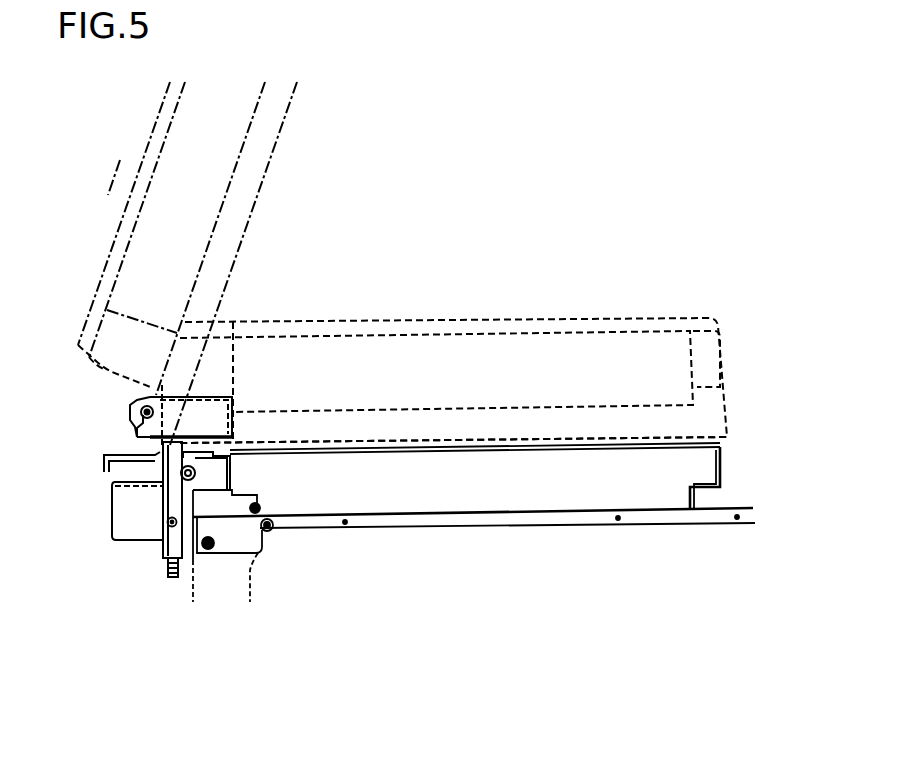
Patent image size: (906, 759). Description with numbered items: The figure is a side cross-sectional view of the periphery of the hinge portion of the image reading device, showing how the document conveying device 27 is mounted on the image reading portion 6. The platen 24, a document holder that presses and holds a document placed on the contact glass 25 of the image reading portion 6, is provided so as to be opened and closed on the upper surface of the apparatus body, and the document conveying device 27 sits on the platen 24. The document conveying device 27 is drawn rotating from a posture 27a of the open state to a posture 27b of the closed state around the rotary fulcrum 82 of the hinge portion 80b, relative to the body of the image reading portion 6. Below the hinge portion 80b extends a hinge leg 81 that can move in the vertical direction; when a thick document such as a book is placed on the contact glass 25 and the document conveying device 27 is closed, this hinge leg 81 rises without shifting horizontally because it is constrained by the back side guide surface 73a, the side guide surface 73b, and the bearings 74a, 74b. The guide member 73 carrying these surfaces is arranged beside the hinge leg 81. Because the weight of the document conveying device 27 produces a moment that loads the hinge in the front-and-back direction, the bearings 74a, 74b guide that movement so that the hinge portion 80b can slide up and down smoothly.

The document conveying device 27 is at (270, 168).
The posture of open state 27a is at (137, 177).
The posture of closed state 27b is at (635, 312).
The platen 24 is at (703, 413).
The contact glass 25 is at (693, 442).
The image reading portion 6 is at (707, 467).
The hinge portion 80b is at (208, 407).
The rotary fulcrum 82 is at (128, 410).
The side guide surface 73b is at (130, 455).
The back side guide surface 73a is at (158, 487).
The stopper 73 is at (111, 512).
The hinge leg 81 is at (160, 499).
The bearing 74a is at (165, 530).
The bearing 74b is at (196, 468).